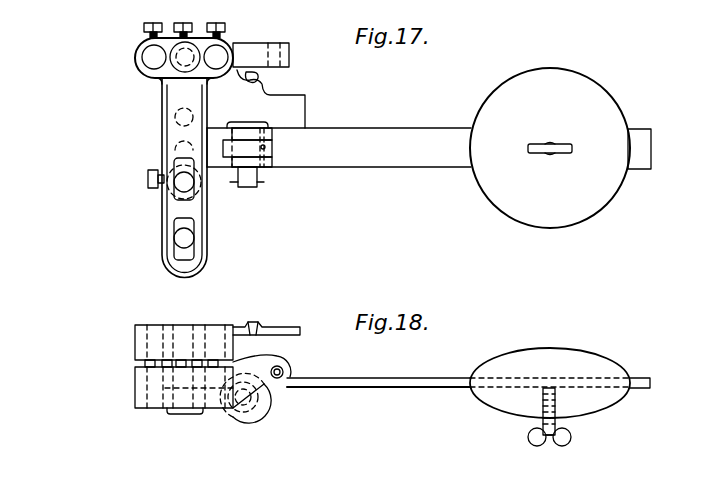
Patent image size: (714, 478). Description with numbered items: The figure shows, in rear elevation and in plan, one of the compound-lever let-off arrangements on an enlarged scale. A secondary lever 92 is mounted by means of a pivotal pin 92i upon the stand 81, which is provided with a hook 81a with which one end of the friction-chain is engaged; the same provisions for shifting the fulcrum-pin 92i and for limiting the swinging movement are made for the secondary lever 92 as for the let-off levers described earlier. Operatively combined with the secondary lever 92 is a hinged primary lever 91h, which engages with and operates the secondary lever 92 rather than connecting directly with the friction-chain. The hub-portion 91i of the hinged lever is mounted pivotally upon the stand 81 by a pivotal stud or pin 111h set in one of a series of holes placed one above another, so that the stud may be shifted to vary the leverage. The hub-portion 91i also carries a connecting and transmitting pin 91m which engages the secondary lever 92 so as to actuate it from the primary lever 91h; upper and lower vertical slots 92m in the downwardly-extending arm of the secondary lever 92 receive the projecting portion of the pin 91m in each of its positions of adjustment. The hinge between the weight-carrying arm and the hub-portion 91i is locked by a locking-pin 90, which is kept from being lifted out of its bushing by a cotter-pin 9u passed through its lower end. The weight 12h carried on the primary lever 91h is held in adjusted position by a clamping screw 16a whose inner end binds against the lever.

In FIG. 17, the pivotal pin 92i is at (160, 74).
In FIG. 18, the pivotal pin 92i is at (182, 414).
In FIG. 17, the secondary lever 92 is at (172, 92).
In FIG. 18, the secondary lever 92 is at (135, 402).
In FIG. 17, the vertical slots 92m is at (175, 160).
In FIG. 17, the pivotal stud or pin 111h is at (172, 188).
In FIG. 17, the connecting and transmitting pin 91m is at (177, 247).
In FIG. 17, the hinged primary lever 91h is at (333, 160).
In FIG. 18, the hinged primary lever 91h is at (368, 385).
In FIG. 17, the hub-portion 91i is at (210, 165).
In FIG. 17, the stand 81 is at (297, 105).
In FIG. 17, the hook 81a is at (263, 78).
In FIG. 18, the hook 81a is at (135, 335).
In FIG. 17, the locking-pin 90 is at (243, 122).
In FIG. 17, the cotter-pin 9u is at (265, 180).
In FIG. 17, the weight 12h is at (597, 95).
In FIG. 18, the weight 12h is at (583, 355).
In FIG. 17, the clamping screw 16a is at (528, 143).
In FIG. 18, the clamping screw 16a is at (572, 436).